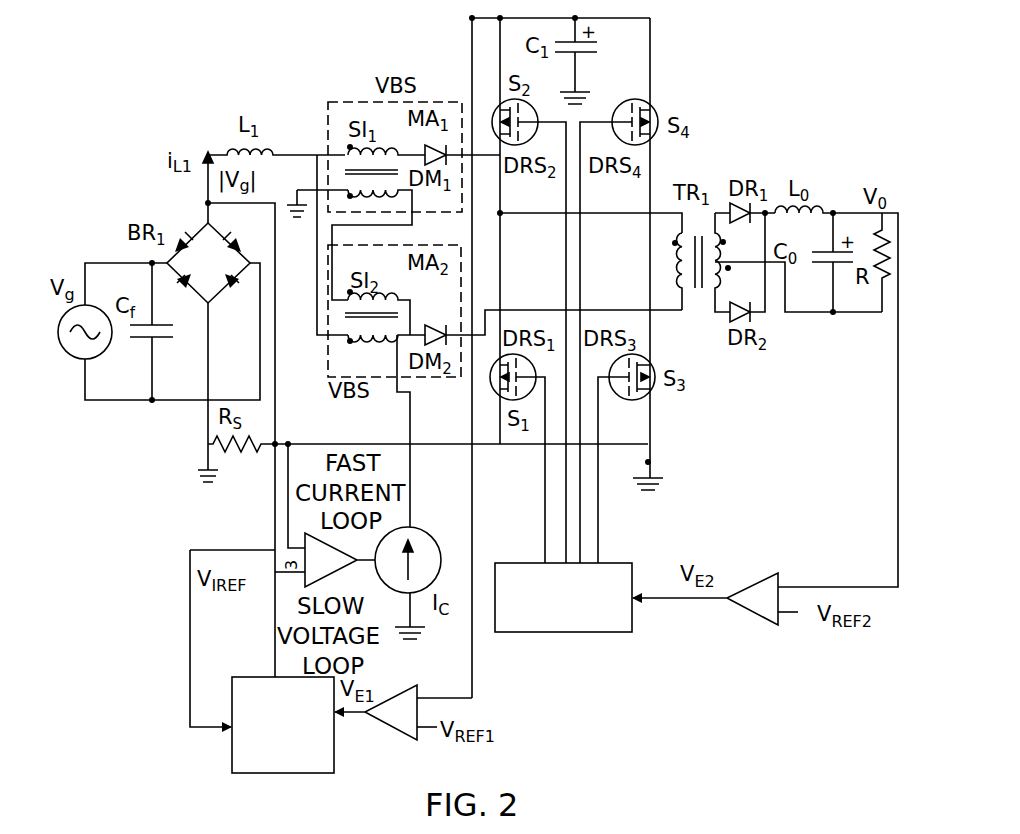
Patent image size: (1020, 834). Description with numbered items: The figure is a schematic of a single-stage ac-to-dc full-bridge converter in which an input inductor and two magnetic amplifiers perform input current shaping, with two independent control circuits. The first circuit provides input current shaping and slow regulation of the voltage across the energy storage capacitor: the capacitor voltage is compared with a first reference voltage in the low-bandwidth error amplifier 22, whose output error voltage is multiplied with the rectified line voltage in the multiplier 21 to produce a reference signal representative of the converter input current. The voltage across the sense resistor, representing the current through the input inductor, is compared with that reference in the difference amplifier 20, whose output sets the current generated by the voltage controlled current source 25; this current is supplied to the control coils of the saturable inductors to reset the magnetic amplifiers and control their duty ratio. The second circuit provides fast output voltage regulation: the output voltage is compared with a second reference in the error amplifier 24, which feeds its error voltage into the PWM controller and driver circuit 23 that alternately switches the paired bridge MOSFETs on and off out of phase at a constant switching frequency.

The comparator (difference amplifier) 20 is at (332, 577).
The multiplier 21 is at (228, 742).
The comparator (error amplifier) 22 is at (387, 747).
The PWM controller and driver circuit 23 is at (572, 638).
The comparator (error amplifier) 24 is at (747, 618).
The voltage controlled current source 25 is at (419, 523).